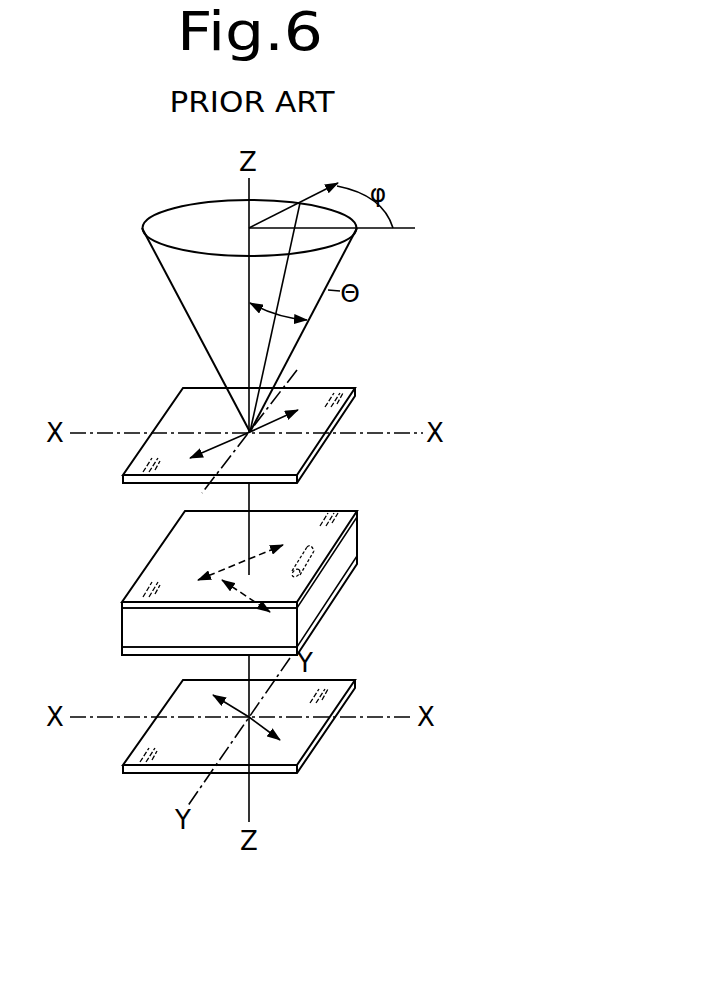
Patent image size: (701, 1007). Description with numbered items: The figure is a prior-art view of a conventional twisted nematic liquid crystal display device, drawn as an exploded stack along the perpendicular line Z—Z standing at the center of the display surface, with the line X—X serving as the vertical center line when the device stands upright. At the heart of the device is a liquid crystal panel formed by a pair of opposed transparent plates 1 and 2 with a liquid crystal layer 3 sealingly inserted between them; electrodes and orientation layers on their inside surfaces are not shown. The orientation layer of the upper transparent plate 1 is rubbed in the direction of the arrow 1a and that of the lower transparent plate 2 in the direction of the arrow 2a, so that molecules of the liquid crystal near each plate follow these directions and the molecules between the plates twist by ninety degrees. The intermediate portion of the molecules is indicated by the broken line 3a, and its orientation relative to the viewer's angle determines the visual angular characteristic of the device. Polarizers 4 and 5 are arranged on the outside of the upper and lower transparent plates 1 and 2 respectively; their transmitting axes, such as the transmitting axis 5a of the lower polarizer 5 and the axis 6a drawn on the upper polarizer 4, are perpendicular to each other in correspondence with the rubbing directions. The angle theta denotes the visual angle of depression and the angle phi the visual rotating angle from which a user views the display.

The upper transparent plate 1 is at (343, 512).
The arrow indicating rubbing direction of upper transparent plate 1a is at (233, 565).
The lower transparent plate 2 is at (330, 613).
The arrow indicating rubbing direction of lower transparent plate 2a is at (227, 585).
The liquid crystal layer 3 is at (353, 547).
The broken line indicating intermediate molecules 3a is at (327, 571).
The polarizer 4 is at (357, 392).
The polarizer 5 is at (313, 755).
The transmitting axis of lower polarizer 5a is at (227, 707).
The transmission axis of polarizer 6a is at (277, 421).